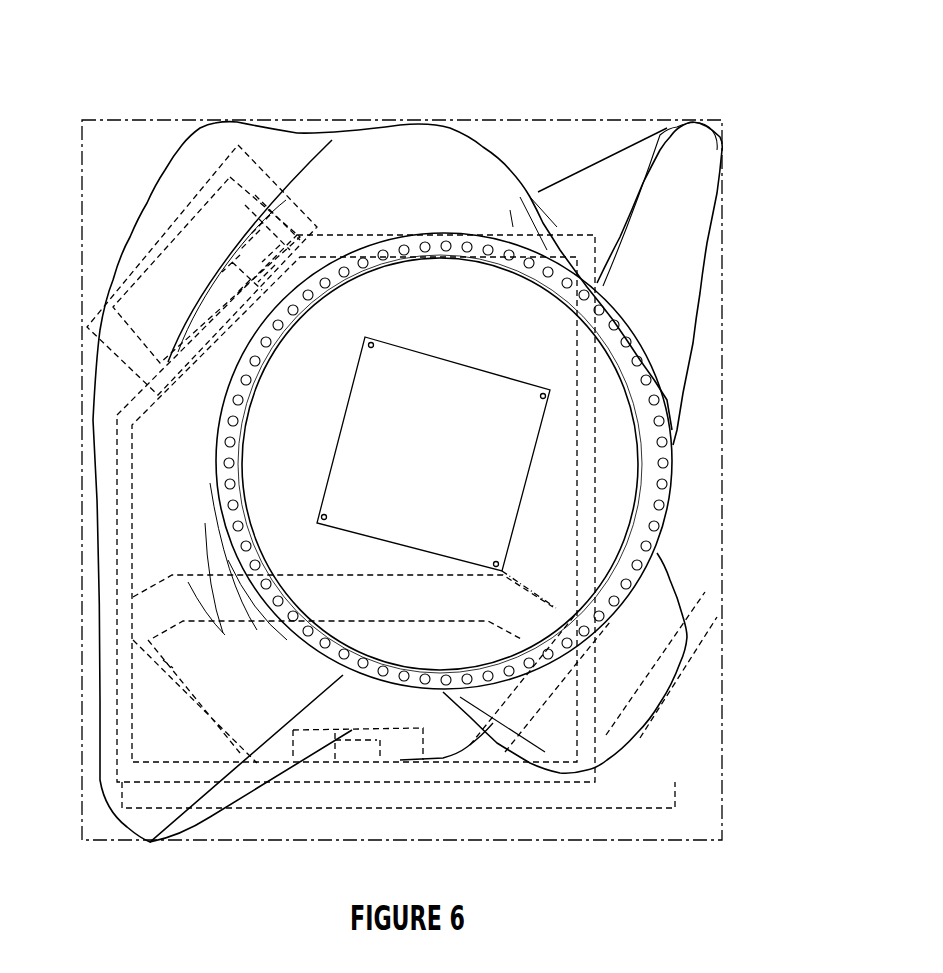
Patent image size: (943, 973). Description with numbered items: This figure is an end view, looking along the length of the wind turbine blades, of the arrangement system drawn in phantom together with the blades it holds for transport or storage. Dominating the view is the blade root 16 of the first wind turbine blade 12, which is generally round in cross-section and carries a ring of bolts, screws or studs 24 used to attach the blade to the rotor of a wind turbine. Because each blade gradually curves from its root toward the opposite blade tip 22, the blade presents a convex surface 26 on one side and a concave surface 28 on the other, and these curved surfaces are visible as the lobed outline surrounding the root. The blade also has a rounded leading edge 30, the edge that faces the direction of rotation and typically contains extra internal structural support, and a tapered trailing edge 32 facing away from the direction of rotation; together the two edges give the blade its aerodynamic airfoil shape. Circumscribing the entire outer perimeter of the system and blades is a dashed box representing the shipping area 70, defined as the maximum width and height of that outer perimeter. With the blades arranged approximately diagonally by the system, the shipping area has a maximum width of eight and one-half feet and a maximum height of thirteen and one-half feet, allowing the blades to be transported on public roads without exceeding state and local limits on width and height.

The first wind turbine blade 12 is at (506, 338).
The blade root 16 is at (673, 485).
The blade tip 22 is at (650, 727).
The studs 24 is at (373, 683).
The convex surface 26 is at (190, 192).
The concave surface 28 is at (675, 287).
The leading edge 30 is at (452, 127).
The trailing edge 32 is at (712, 120).
The shipping area 70 is at (80, 508).